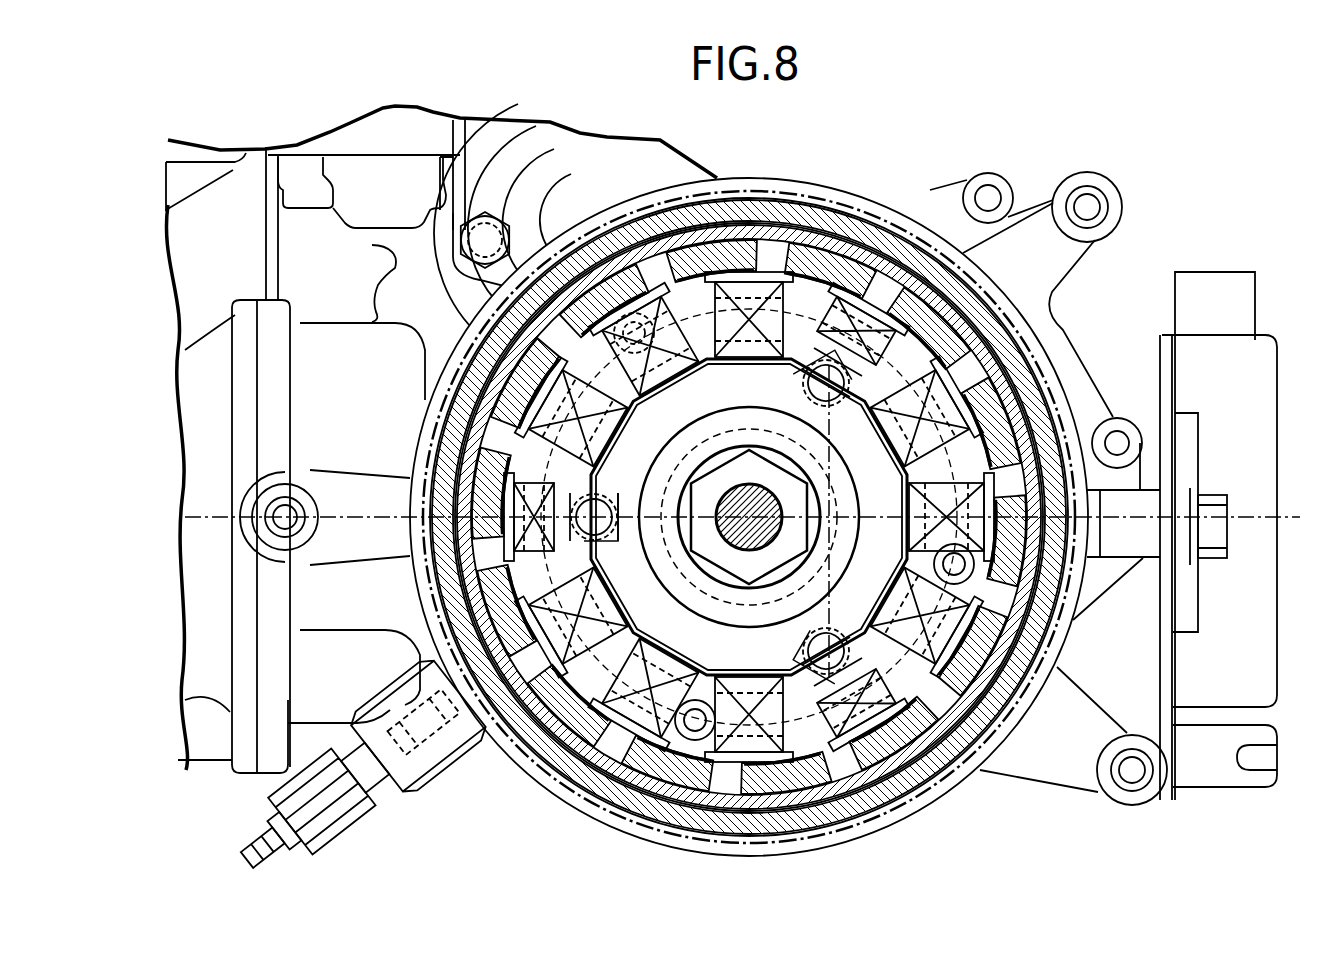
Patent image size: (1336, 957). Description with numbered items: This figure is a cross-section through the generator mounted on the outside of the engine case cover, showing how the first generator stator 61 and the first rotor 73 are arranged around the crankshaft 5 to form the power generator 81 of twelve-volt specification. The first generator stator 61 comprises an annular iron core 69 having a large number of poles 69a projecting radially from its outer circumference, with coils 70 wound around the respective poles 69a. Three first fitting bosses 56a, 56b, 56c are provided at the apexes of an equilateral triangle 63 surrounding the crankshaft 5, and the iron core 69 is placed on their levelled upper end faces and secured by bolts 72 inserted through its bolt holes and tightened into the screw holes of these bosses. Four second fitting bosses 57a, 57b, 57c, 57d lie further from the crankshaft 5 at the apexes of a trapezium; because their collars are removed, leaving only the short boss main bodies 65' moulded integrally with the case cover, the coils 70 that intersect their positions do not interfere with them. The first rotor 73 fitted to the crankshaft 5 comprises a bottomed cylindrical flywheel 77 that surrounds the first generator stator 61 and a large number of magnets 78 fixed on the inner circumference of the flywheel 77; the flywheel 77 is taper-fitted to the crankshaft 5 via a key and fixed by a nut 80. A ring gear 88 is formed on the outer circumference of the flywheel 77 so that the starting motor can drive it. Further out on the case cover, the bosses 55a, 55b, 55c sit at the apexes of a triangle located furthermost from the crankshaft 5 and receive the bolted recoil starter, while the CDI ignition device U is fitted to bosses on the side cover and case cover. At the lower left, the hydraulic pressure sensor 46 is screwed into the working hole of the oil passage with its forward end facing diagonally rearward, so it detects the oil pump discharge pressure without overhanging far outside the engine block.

The crankshaft 5 is at (700, 545).
The hydraulic pressure sensor 46 is at (360, 835).
The boss 55a is at (265, 500).
The boss 55b is at (1100, 185).
The boss 55c is at (1122, 795).
The first fitting boss 56a is at (580, 568).
The first fitting boss 56b is at (854, 428).
The first fitting boss 56c is at (790, 644).
The second fitting boss 57a is at (738, 341).
The second fitting boss 57b is at (926, 434).
The second fitting boss 57c is at (870, 702).
The second fitting boss 57d is at (680, 750).
The first generator stator 61 is at (803, 350).
The equilateral triangle 63 is at (735, 626).
The boss main body 65' is at (799, 493).
The annular iron core 69 is at (896, 562).
The pole 69a is at (440, 360).
The coil 70 is at (520, 436).
The bolt 72 is at (804, 386).
The first rotor 73 is at (380, 264).
The flywheel 77 is at (466, 305).
The magnet 78 is at (490, 325).
The nut 80 is at (720, 485).
The power generator 81 is at (787, 189).
The ring gear 88 is at (1093, 367).
The CDI ignition device U is at (1232, 370).